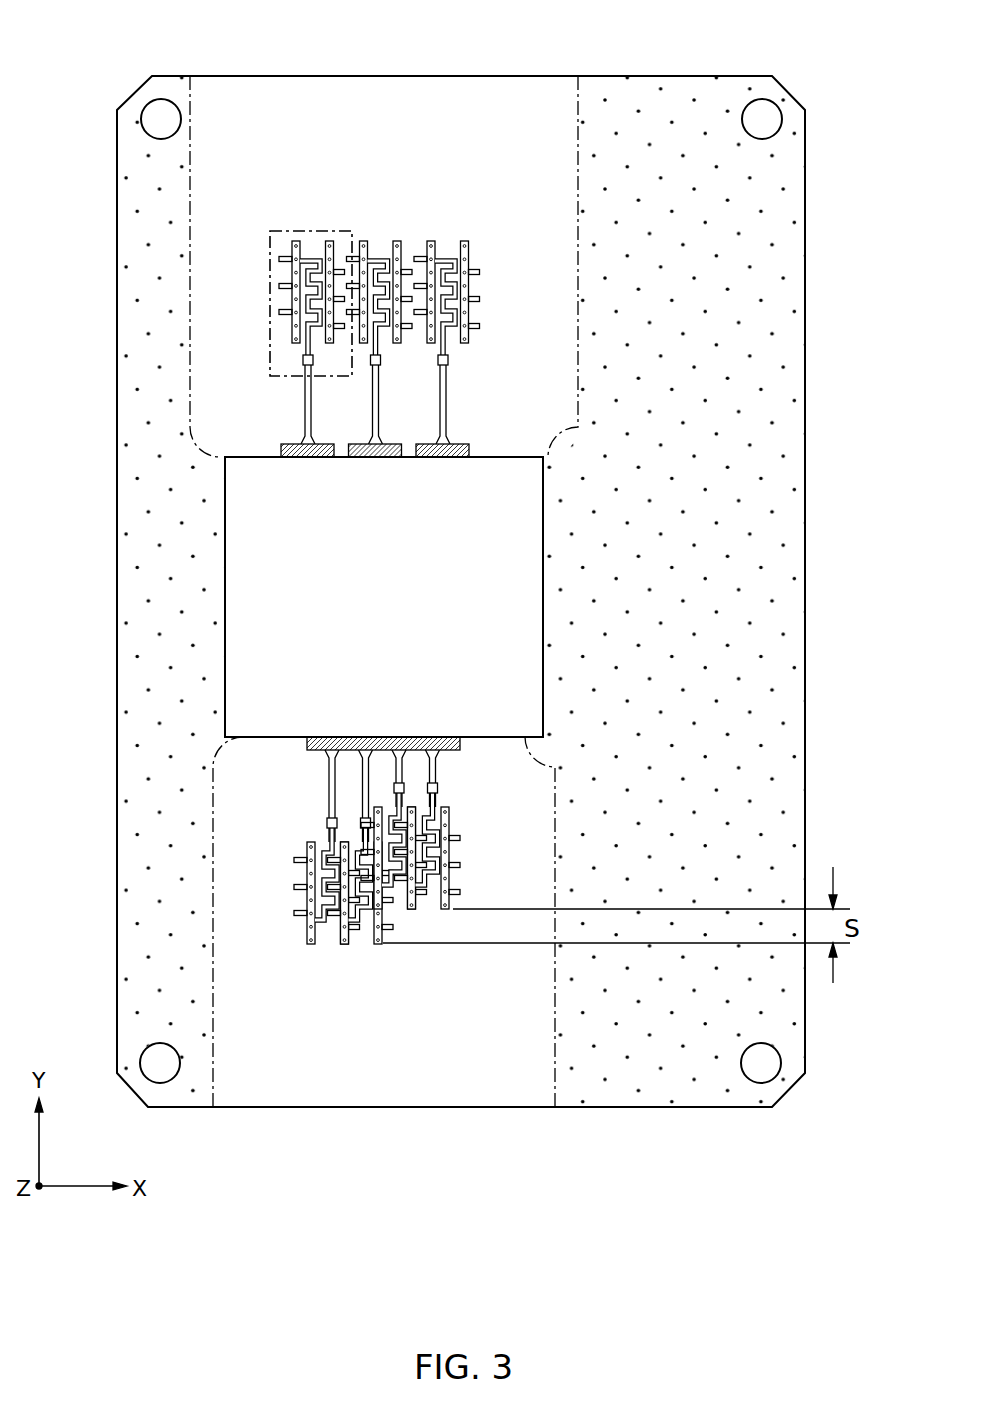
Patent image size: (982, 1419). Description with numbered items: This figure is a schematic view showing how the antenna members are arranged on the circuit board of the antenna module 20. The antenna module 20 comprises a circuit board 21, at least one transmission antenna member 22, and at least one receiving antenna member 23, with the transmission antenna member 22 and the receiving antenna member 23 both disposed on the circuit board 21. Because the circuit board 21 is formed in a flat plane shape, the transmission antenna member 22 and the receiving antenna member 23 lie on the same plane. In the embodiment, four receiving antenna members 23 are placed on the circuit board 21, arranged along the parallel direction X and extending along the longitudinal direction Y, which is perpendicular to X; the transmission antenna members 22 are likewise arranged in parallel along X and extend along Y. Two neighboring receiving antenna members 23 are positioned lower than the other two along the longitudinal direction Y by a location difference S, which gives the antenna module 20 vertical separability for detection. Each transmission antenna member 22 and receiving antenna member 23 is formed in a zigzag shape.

The antenna module 20 is at (835, 488).
The circuit board 21 is at (728, 288).
The transmission antenna member 22 is at (445, 263).
The receiving antenna member 23 is at (435, 807).